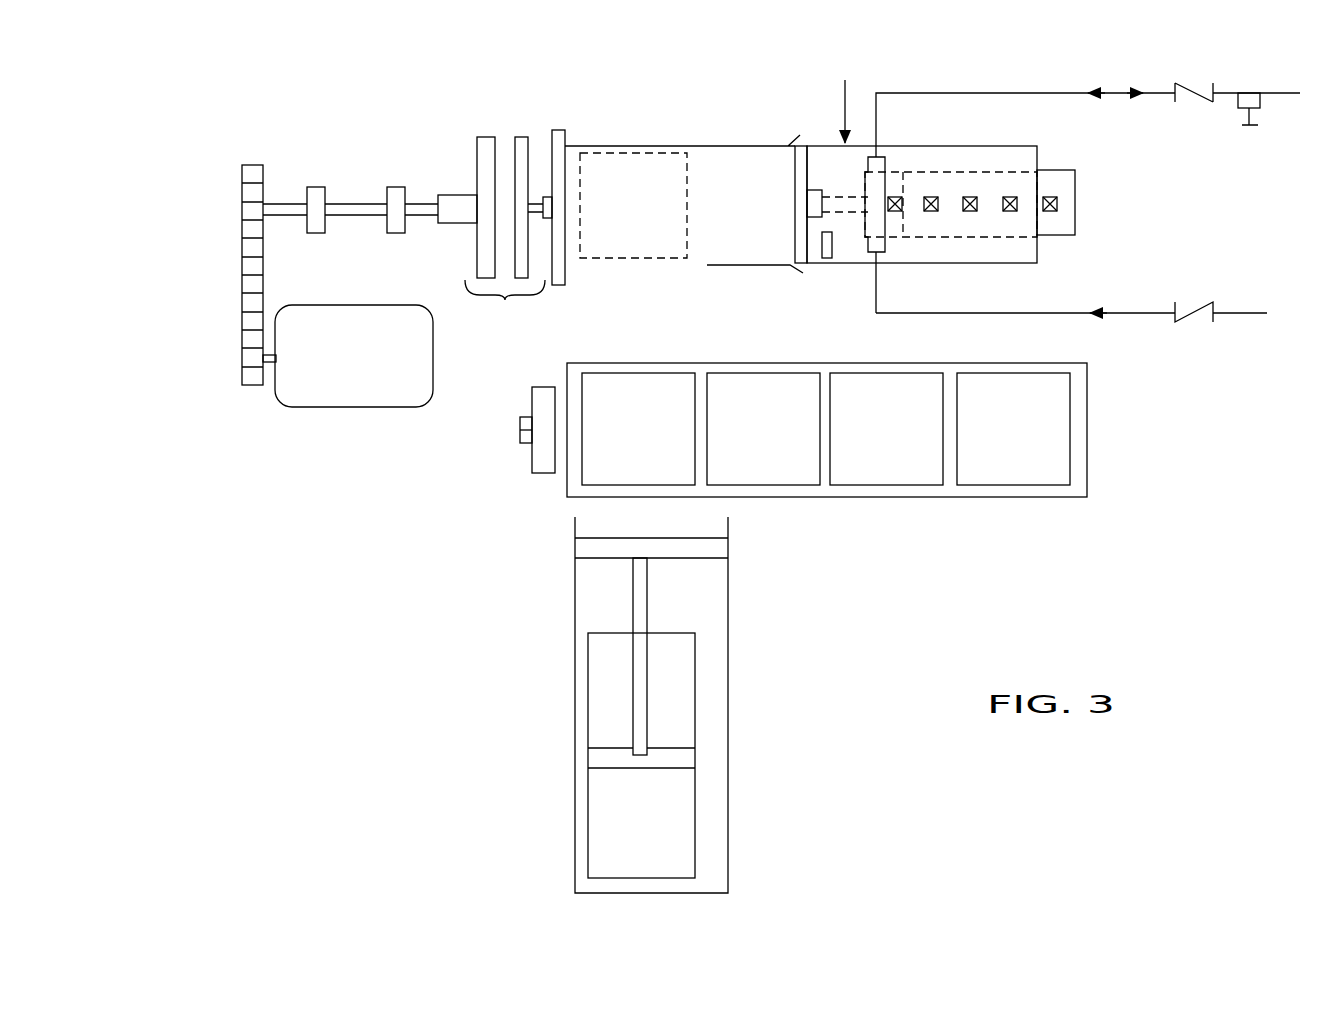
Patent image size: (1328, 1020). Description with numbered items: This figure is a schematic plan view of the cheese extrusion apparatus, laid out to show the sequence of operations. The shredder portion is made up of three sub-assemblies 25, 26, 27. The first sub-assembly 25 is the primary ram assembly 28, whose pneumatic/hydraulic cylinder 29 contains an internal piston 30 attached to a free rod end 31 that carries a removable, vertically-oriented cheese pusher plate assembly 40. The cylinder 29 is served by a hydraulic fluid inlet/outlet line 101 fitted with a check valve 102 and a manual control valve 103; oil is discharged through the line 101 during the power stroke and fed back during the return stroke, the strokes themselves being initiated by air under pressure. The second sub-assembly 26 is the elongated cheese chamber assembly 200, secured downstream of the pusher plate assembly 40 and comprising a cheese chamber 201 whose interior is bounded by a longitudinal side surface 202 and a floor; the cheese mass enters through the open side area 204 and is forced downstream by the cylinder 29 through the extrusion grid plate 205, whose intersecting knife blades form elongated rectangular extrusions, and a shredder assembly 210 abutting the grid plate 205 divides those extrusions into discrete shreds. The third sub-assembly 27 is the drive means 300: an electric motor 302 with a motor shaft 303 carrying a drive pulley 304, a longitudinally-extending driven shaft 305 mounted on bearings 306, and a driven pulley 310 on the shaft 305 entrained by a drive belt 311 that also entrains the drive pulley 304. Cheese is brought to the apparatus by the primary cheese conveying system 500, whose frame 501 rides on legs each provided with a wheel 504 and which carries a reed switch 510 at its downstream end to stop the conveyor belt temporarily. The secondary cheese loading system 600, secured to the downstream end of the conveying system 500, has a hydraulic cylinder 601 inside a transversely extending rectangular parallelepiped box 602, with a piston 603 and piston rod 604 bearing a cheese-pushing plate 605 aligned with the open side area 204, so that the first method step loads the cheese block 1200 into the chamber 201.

The first sub-assembly 25 is at (953, 204).
The second sub-assembly 26 is at (518, 179).
The third sub-assembly 27 is at (370, 157).
The primary ram assembly 28 is at (1020, 153).
The pneumatic/hydraulic cylinder 29 is at (1010, 217).
The piston 30 is at (882, 163).
The free rod end 31 is at (843, 202).
The cheese pusher plate assembly 40 is at (805, 150).
The hydraulic fluid inlet/outlet line 101 is at (955, 93).
The check valve 102 is at (1188, 85).
The manual control valve 103 is at (1262, 98).
The elongated cheese chamber assembly 200 is at (684, 191).
The cheese chamber 201 is at (581, 189).
The longitudinal side surface 202 is at (627, 145).
The open side area 204 is at (623, 265).
The extrusion grid plate 205 is at (523, 137).
The shredder assembly 210 is at (489, 202).
The drive means 300 is at (290, 285).
The electric motor 302 is at (335, 398).
The motor shaft 303 is at (273, 362).
The drive pulley 304 is at (247, 340).
The driven shaft 305 is at (345, 215).
The bearings 306 is at (313, 187).
The driven pulley 310 is at (265, 185).
The drive belt 311 is at (255, 300).
The primary cheese conveying system 500 is at (861, 454).
The frame 501 is at (1083, 407).
The wheel 504 is at (947, 313).
The reed switch 510 is at (1055, 202).
The secondary cheese loading system 600 is at (665, 705).
The hydraulic cylinder 601 is at (663, 815).
The rectangular parallelepiped box 602 is at (730, 643).
The piston 603 is at (610, 758).
The piston rod 604 is at (638, 602).
The cheese-pushing plate 605 is at (702, 555).
The cheese block 1200 is at (670, 440).